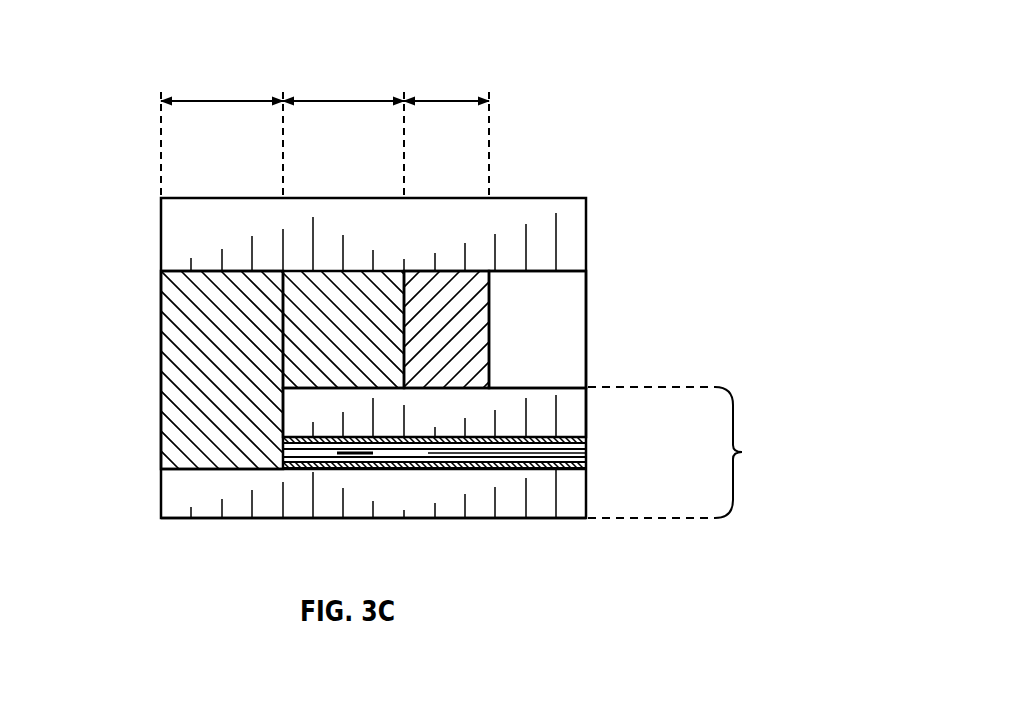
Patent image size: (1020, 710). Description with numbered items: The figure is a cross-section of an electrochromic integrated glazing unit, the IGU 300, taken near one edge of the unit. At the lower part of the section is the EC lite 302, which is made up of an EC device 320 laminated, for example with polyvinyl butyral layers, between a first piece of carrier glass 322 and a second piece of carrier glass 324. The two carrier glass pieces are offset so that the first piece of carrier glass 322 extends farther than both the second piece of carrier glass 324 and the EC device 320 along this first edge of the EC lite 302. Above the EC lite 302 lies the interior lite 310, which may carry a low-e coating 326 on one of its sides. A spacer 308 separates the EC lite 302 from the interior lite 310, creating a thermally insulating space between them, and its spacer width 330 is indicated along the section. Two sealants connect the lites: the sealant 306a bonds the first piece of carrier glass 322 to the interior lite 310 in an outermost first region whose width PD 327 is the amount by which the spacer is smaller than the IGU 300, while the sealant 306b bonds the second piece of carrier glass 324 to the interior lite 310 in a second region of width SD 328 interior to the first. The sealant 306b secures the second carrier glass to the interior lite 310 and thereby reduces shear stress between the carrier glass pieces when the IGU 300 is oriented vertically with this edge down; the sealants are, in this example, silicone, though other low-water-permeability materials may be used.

The IGU 300 is at (137, 108).
The EC lite 302 is at (742, 452).
The sealant 306a is at (205, 338).
The sealant 306b is at (302, 288).
The spacer 308 is at (489, 365).
The interior lite 310 is at (538, 213).
The EC device 320 is at (588, 437).
The first piece of carrier glass 322 is at (189, 491).
The second piece of carrier glass 324 is at (563, 403).
The low-e coating 326 is at (577, 272).
The width PD 327 is at (227, 100).
The width SD 328 is at (345, 100).
The third width 330 is at (447, 100).